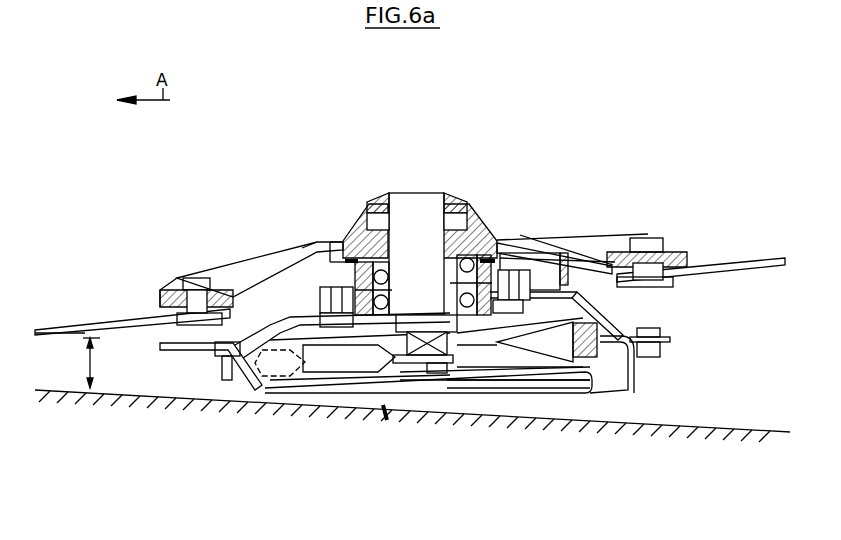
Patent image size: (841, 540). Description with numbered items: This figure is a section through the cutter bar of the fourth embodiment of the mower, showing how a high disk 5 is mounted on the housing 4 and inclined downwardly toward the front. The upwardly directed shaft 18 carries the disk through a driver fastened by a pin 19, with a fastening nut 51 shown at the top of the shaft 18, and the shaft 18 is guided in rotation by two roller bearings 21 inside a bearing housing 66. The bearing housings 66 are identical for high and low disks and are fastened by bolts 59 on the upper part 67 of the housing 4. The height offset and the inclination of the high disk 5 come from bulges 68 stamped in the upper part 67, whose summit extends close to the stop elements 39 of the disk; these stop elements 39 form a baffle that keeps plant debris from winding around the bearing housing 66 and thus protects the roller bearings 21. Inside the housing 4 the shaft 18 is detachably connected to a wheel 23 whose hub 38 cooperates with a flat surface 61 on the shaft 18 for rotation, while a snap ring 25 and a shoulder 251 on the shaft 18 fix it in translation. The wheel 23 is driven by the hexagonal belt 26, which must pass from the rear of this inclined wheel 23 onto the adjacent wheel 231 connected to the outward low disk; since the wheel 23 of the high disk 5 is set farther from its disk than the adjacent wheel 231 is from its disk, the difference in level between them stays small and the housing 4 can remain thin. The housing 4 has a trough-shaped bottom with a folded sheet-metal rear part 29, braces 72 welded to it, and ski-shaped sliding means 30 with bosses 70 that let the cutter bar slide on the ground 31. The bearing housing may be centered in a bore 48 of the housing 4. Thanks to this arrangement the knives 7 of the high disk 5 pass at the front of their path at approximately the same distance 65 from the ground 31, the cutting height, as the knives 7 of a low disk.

The housing 4 is at (393, 400).
The high disk 5 is at (302, 248).
The knives 7 is at (82, 328).
The shaft 18 is at (418, 212).
The pin 19 is at (462, 210).
The roller bearings 21 is at (495, 262).
The wheel 23 is at (290, 382).
The snap ring 25 is at (402, 365).
The hexagonal belt 26 is at (615, 363).
The rear part 29 is at (630, 363).
The sliding means 30 is at (195, 365).
The ground 31 is at (148, 465).
The hub 38 is at (472, 300).
The stop elements 39 is at (572, 270).
The bore 48 is at (455, 320).
The nut 51 is at (379, 200).
The bolts 59 is at (336, 300).
The flat surface 61 is at (432, 370).
The distance 65 is at (95, 358).
The bearing housings 66 is at (327, 300).
The upper part 67 is at (268, 328).
The bulges 68 is at (587, 299).
The bosses 70 is at (436, 403).
The braces 72 is at (433, 402).
The adjacent wheel 231 is at (548, 318).
The shoulder 251 is at (430, 330).